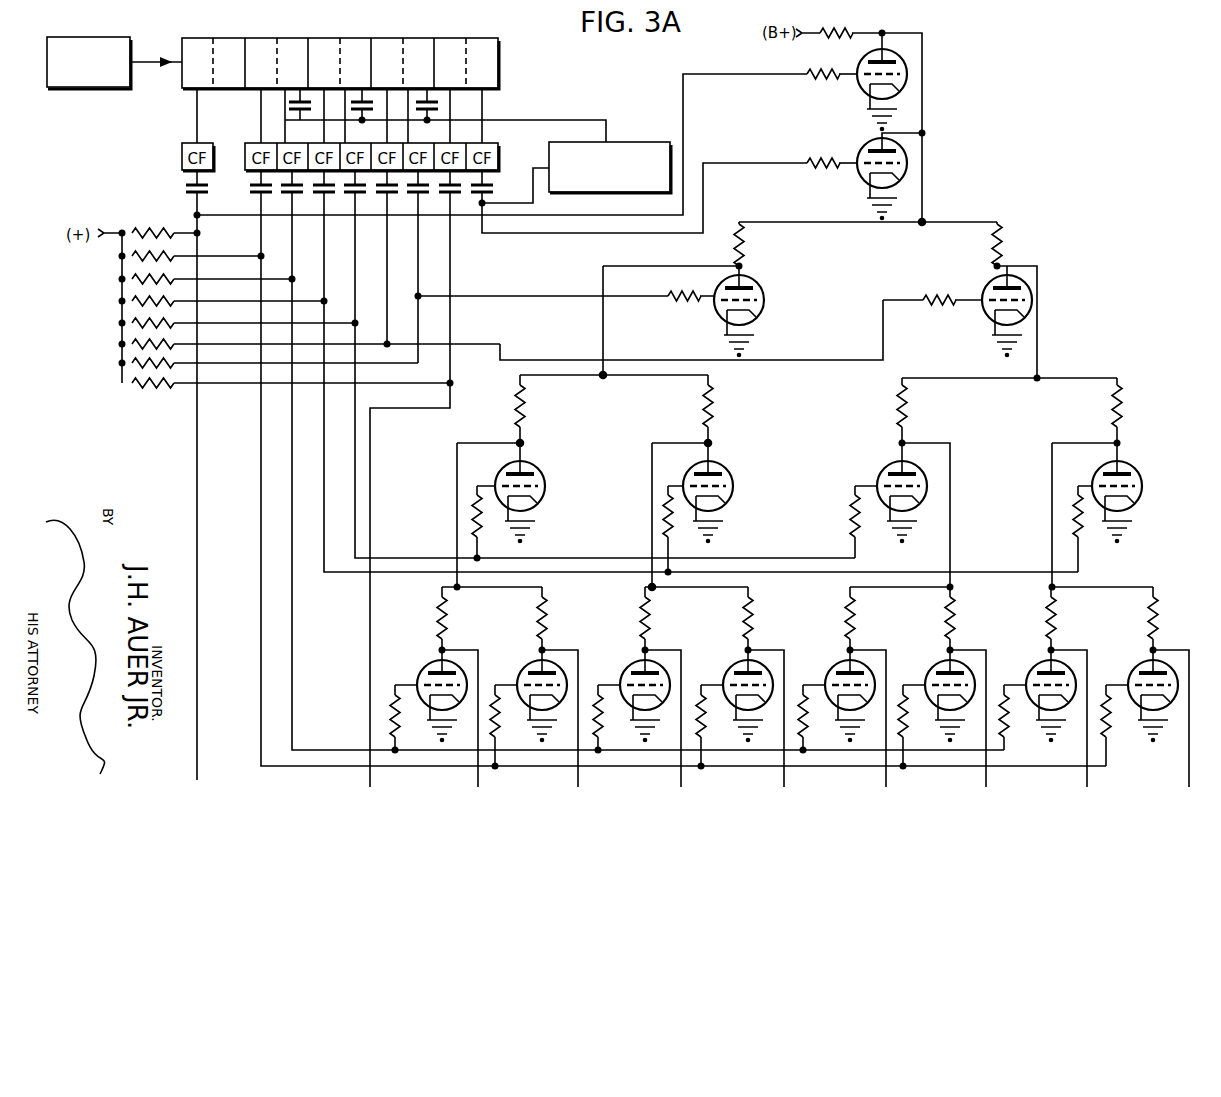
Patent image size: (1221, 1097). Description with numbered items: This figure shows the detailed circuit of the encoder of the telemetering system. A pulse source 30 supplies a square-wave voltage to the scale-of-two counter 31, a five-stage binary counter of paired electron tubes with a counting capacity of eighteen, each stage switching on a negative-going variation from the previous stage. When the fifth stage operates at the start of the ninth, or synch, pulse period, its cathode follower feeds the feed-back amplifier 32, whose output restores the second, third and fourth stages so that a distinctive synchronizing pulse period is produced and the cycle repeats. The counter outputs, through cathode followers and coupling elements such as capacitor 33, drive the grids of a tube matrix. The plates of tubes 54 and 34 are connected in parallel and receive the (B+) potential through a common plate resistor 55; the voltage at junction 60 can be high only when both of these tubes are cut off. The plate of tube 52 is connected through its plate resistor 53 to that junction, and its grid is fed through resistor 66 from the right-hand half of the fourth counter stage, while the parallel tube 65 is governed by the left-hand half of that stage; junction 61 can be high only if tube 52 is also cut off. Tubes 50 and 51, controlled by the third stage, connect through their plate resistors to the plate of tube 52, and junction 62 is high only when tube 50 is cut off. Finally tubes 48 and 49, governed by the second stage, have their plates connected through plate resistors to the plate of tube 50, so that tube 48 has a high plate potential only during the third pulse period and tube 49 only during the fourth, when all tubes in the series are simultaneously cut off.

The pulse source 30 is at (80, 36).
The scale-of-two counter 31 is at (214, 41).
The feed-back amplifier 32 is at (615, 142).
The coupling capacitor 33 is at (190, 190).
The tube 34 is at (858, 84).
The tube 48 is at (628, 666).
The tube 49 is at (732, 666).
The tube 50 is at (729, 478).
The tube 51 is at (543, 478).
The tube 52 is at (765, 297).
The plate resistor 53 is at (744, 250).
The tube 54 is at (858, 178).
The common plate resistor 55 is at (844, 28).
The junction 60 is at (922, 222).
The junction 61 is at (603, 375).
The junction 62 is at (652, 587).
The tube 65 is at (976, 292).
The resistor 66 is at (680, 301).